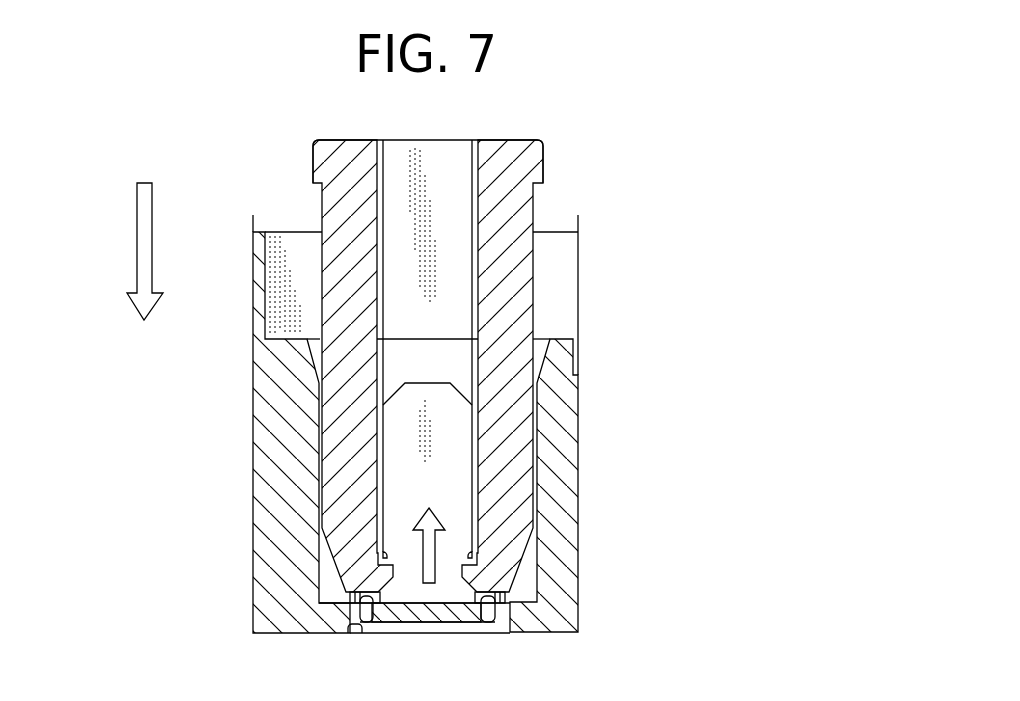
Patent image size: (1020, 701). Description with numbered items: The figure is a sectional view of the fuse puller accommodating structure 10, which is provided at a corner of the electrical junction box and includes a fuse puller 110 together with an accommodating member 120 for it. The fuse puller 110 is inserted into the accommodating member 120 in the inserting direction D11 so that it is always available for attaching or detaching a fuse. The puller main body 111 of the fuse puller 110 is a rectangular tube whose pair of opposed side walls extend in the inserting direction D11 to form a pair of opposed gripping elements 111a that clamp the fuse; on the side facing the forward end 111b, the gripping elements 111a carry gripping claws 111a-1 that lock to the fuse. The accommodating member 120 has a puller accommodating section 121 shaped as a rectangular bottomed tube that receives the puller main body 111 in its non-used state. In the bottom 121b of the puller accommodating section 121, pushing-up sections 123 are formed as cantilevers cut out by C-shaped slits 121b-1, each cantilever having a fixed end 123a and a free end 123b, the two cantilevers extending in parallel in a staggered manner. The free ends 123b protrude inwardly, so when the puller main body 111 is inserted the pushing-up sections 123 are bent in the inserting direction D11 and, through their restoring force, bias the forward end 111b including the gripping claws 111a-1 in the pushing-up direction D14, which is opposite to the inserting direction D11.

The fuse puller accommodating structure 10 is at (444, 121).
The fuse puller 110 is at (519, 133).
The puller main body 111 is at (337, 140).
The gripping elements 111a is at (321, 265).
The gripping claws 111a-1 is at (385, 557).
The forward end 111b is at (358, 605).
The accommodating member 120 is at (562, 337).
The puller accommodating section 121 is at (579, 402).
The bottom 121b is at (527, 596).
The C-shaped slits 121b-1 is at (508, 634).
The pushing-up sections 123 is at (426, 624).
The fixed end 123a is at (341, 633).
The free end 123b is at (365, 624).
The inserting direction D11 is at (136, 238).
The pushing-up direction D14 is at (441, 548).